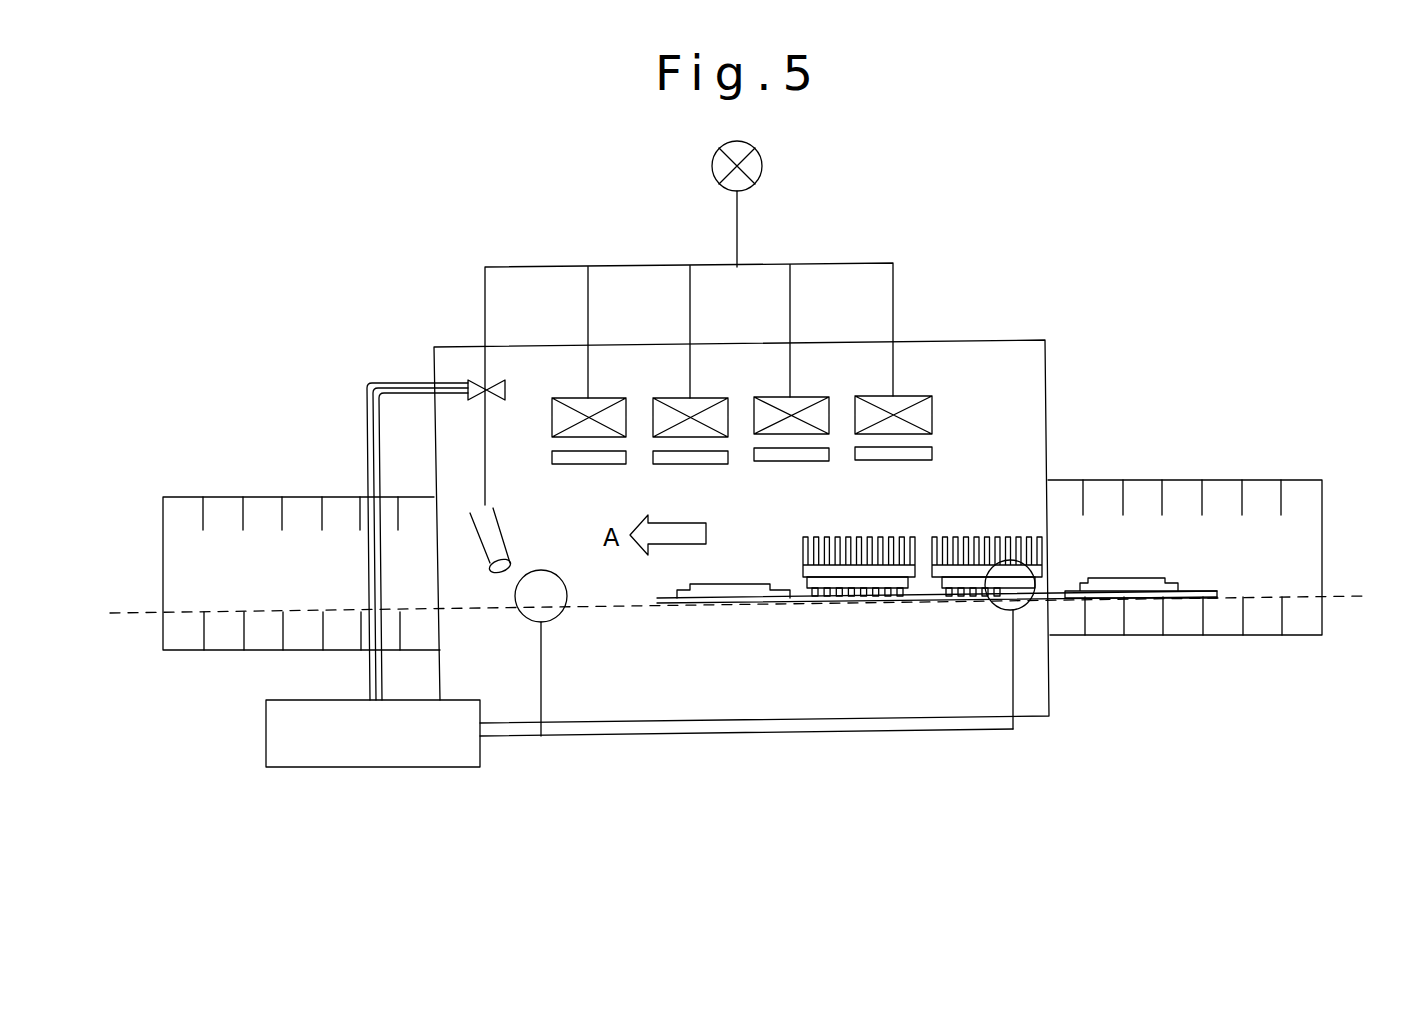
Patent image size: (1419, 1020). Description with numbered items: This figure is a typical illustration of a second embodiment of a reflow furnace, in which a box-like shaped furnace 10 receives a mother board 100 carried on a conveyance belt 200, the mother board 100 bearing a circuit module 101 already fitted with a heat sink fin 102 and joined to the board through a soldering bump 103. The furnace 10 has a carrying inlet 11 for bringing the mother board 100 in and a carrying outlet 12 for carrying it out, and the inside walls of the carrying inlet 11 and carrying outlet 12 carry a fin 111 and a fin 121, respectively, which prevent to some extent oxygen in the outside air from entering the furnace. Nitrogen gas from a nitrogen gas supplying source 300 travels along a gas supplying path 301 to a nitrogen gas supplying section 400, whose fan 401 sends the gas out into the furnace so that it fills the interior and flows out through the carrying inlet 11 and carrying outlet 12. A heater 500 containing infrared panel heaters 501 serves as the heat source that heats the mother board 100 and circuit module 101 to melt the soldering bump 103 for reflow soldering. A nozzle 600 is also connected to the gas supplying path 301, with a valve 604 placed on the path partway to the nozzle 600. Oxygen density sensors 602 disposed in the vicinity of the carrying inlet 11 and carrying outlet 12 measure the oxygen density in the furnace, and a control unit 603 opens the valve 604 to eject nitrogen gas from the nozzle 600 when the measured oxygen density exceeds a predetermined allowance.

The box-like shaped furnace 10 is at (983, 338).
The carrying inlet 11 is at (1185, 522).
The fin 111 is at (1205, 497).
The carrying outlet 12 is at (301, 541).
The fin 121 is at (280, 510).
The mother board 100 is at (1207, 590).
The circuit module 101 is at (812, 585).
The heat sink fin 102 is at (862, 540).
The soldering bump 103 is at (865, 597).
The conveyance belt 200 is at (1345, 594).
The nitrogen gas supplying source 300 is at (762, 170).
The gas supplying path 301 is at (893, 283).
The nitrogen gas supplying section 400 is at (787, 392).
The fan 401 is at (656, 398).
The heater 500 is at (787, 468).
The infrared panel heater 501 is at (620, 464).
The nozzle 600 is at (500, 547).
The oxygen density sensor 602 is at (557, 593).
The control unit 603 is at (468, 700).
The valve 604 is at (507, 392).